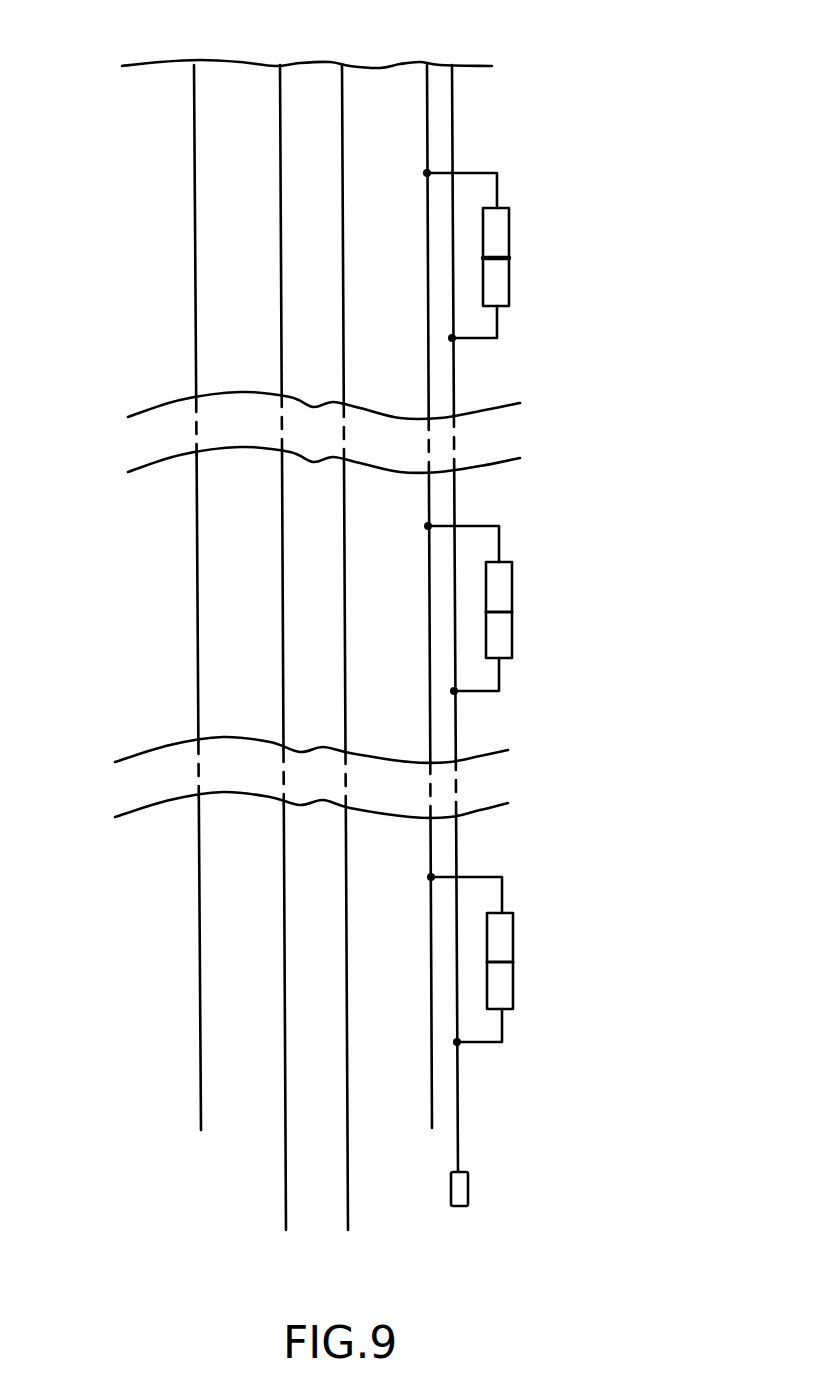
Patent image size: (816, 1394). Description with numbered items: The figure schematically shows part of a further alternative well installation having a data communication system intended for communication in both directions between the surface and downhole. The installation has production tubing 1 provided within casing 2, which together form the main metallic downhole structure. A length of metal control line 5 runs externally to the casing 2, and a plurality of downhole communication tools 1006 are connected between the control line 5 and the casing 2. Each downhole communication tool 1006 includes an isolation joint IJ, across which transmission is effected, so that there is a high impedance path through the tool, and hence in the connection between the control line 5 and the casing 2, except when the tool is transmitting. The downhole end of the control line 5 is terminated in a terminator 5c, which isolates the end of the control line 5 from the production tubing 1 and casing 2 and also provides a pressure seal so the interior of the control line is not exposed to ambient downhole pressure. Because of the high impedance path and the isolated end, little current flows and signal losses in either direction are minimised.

The production tubing 1 is at (278, 222).
The casing 2 is at (195, 345).
The control line 5 is at (460, 1102).
The terminator 5c is at (460, 1187).
The downhole communication tool 1006 is at (500, 230).
The isolation joint IJ is at (502, 263).